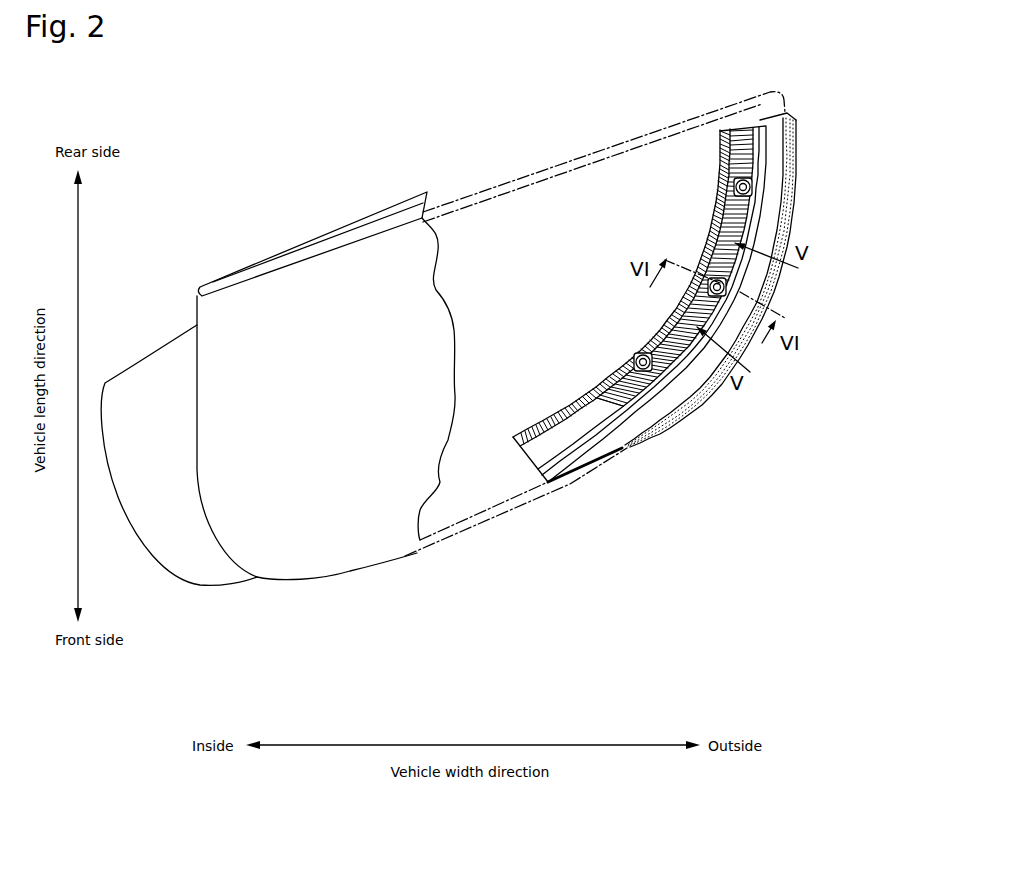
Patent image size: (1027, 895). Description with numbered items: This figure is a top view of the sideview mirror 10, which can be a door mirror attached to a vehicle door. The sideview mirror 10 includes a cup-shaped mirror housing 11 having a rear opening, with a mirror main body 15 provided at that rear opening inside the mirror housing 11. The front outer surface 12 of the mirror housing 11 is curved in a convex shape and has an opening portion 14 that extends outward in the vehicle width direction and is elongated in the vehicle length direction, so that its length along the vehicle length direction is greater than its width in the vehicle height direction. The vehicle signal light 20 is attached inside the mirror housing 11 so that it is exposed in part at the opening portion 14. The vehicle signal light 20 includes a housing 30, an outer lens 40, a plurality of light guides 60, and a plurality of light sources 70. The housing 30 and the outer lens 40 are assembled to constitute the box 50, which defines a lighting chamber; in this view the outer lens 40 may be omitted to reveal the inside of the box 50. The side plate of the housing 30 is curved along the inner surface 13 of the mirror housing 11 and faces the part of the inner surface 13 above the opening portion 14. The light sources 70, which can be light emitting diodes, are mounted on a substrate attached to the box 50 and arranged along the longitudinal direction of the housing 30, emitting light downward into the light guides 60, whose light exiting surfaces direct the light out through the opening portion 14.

The sideview mirror 10 is at (234, 186).
The mirror housing 11 is at (343, 563).
The front outer surface 12 is at (500, 520).
The inner surface 13 is at (456, 526).
The opening portion 14 is at (632, 448).
The mirror main body 15 is at (530, 177).
The vehicle signal light 20 is at (699, 233).
The housing 30 is at (540, 442).
The outer lens 40 is at (577, 396).
The box 50 is at (543, 338).
The light guide 60 is at (740, 130).
The light source 70 is at (750, 182).